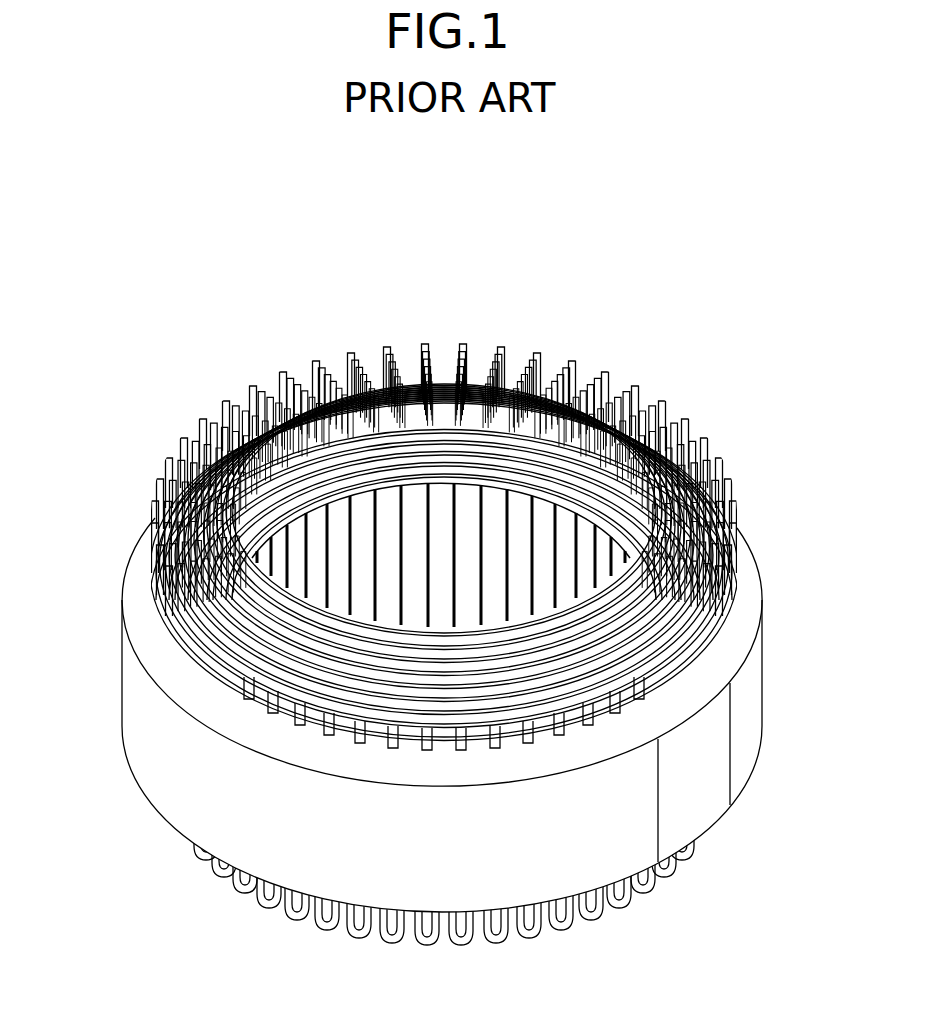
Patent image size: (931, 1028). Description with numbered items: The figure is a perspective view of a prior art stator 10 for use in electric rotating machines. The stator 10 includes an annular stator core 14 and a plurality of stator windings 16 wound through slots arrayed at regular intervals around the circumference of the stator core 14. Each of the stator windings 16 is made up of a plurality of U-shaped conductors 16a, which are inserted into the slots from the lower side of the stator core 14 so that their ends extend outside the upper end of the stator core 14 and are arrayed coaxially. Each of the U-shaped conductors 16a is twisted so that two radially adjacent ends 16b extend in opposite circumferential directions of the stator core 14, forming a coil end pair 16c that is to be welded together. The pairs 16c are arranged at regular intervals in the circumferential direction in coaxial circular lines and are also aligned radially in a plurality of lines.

The stator 10 is at (440, 578).
The stator core 14 is at (748, 600).
The stator windings 16 is at (395, 611).
The U-shaped conductors 16a is at (216, 654).
The ends of the U-shaped conductors 16b is at (273, 667).
The coil end pair 16c is at (322, 372).